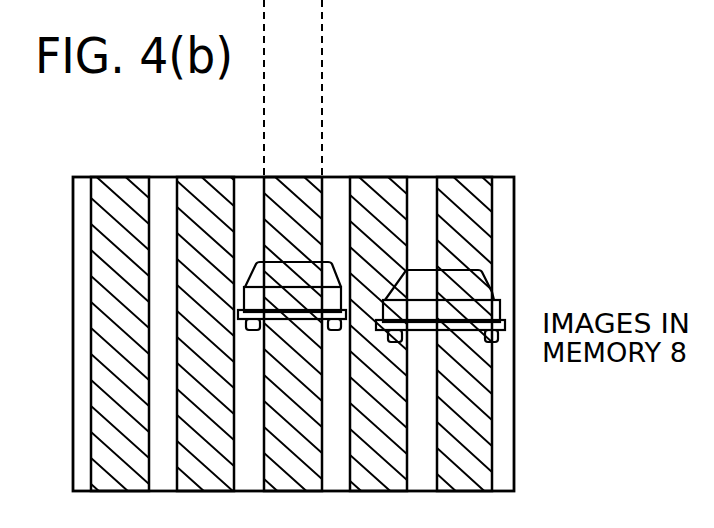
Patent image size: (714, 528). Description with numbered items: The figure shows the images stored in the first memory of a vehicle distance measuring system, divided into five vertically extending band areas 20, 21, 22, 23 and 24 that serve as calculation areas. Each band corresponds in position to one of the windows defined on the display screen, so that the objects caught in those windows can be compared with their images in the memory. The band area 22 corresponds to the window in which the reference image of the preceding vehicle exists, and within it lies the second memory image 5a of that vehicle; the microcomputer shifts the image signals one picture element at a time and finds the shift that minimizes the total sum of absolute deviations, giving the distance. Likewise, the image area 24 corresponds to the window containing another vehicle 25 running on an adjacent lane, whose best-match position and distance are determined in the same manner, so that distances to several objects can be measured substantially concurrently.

The calculation area 20 is at (121, 185).
The calculation area 21 is at (203, 185).
The vertically extending band area 22 is at (298, 185).
The calculation area 23 is at (380, 185).
The image area 24 is at (470, 190).
The second memory image 5a is at (248, 262).
The other vehicle 25 is at (421, 270).